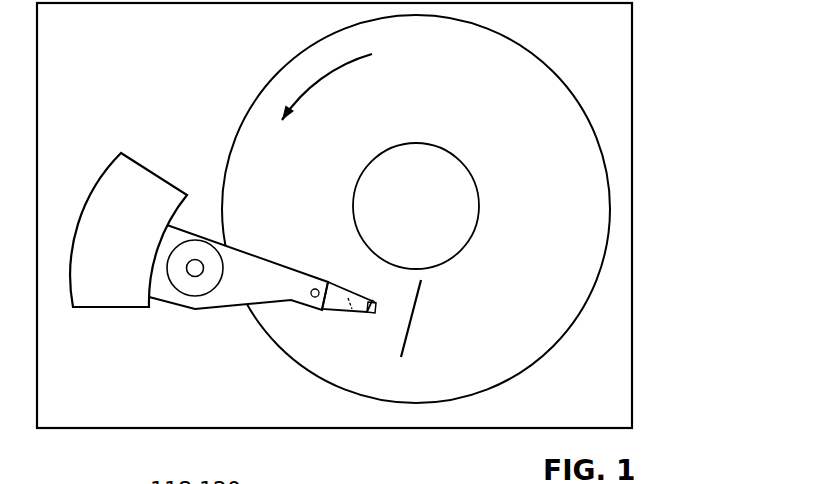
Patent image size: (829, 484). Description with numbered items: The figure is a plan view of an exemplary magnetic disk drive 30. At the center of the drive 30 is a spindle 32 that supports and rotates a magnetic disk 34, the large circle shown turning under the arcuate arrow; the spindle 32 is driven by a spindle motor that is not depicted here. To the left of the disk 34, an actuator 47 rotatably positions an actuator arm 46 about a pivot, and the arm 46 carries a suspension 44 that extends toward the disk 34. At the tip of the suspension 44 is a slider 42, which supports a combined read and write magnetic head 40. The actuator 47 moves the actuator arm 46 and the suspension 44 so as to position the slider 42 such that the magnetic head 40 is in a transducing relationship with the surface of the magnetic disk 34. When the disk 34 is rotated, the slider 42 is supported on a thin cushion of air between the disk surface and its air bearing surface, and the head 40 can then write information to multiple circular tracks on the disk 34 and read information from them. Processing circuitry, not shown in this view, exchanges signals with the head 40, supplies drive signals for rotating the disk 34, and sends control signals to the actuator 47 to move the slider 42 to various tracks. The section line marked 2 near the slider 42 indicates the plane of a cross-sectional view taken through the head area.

The magnetic disk drive 30 is at (648, 38).
The spindle 32 is at (455, 156).
The magnetic disk 34 is at (556, 229).
The magnetic head 40 is at (374, 314).
The slider 42 is at (375, 301).
The suspension 44 is at (337, 309).
The actuator arm 46 is at (280, 270).
The actuator 47 is at (162, 180).
The section line 2- 2 is at (424, 287).